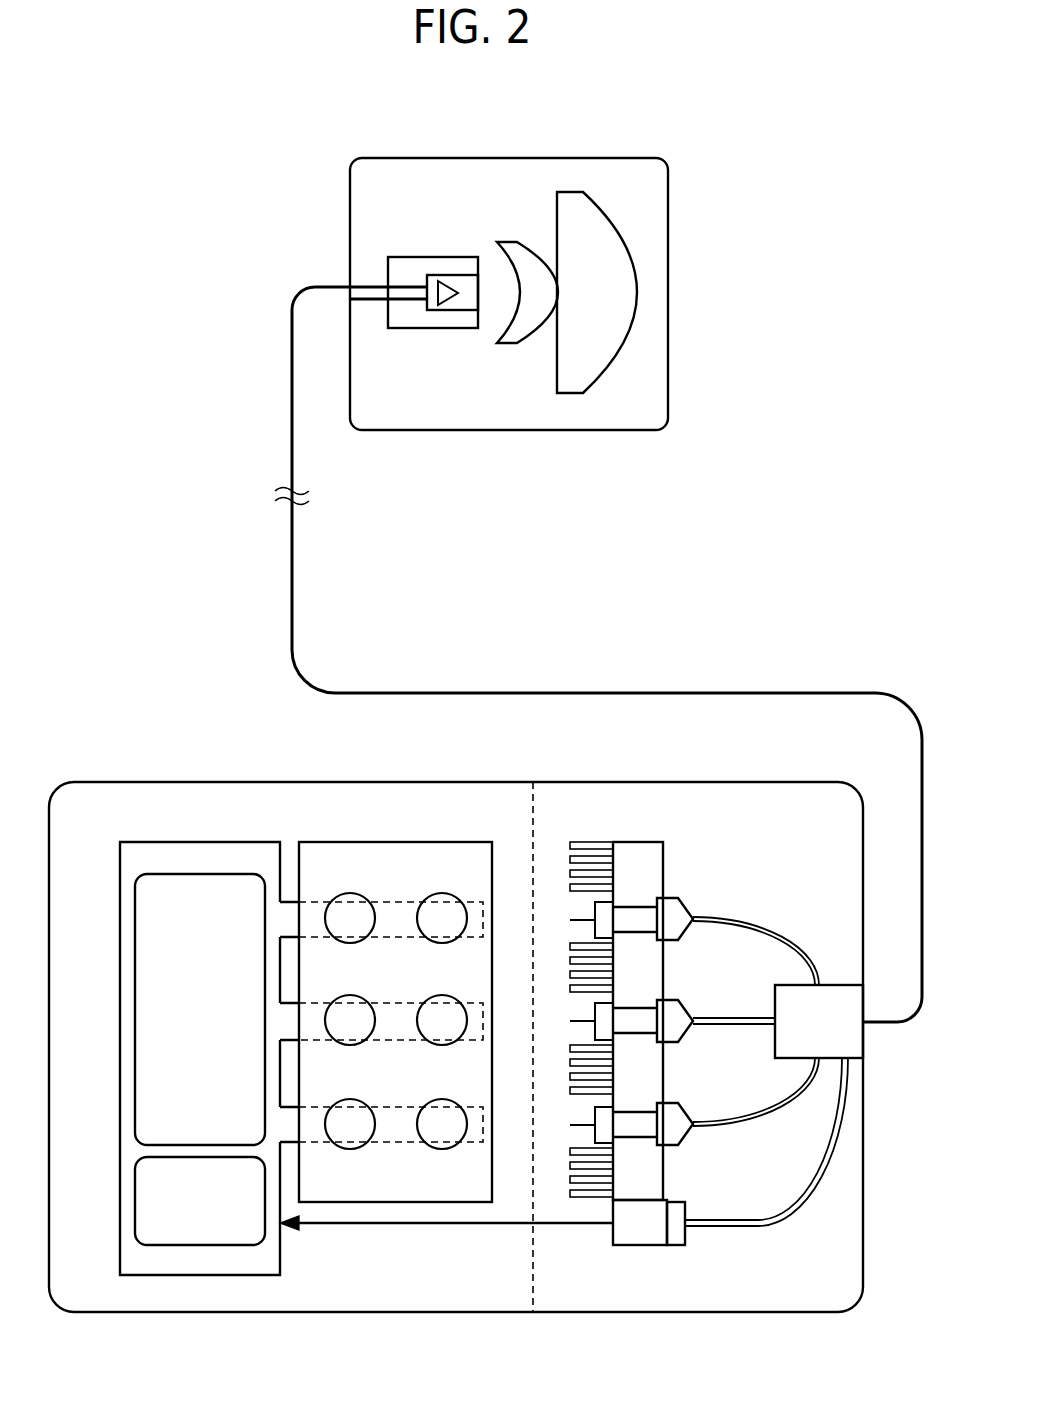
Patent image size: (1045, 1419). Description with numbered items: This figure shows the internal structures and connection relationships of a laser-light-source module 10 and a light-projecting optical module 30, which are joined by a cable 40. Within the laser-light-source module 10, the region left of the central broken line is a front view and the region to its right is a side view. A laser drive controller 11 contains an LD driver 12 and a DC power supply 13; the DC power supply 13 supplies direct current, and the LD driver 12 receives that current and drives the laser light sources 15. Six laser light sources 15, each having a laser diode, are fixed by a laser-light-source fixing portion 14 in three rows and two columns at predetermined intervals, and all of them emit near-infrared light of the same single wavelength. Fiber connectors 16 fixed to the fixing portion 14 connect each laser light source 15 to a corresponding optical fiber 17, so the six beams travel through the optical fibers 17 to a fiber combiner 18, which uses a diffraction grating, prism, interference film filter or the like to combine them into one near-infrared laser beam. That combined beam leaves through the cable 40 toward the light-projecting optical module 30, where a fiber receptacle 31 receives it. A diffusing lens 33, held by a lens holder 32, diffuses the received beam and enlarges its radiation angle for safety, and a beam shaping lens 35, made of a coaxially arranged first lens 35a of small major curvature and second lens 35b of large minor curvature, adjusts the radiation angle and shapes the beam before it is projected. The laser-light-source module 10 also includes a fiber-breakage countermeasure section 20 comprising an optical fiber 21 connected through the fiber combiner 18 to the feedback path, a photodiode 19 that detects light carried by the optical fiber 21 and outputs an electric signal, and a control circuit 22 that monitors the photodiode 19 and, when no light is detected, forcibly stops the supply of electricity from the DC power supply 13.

The laser-light-source module 10 is at (136, 780).
The laser drive controller 11 is at (205, 842).
The LD driver 12 is at (135, 973).
The DC power supply 13 is at (135, 1200).
The laser-light-source fixing portion 14 is at (430, 842).
The laser light source 15 is at (440, 895).
The fiber connector 16 is at (680, 906).
The optical fiber 17 is at (777, 932).
The fiber combiner 18 is at (805, 1036).
The photodiode 19 is at (678, 1213).
The fiber-breakage countermeasure section 20 is at (512, 1283).
The optical fiber 21 is at (782, 1220).
The control circuit 22 is at (648, 1248).
The light-projecting optical module 30 is at (441, 156).
The fiber receptacle 31 is at (403, 257).
The lens holder 32 is at (455, 275).
The diffusing lens 33 is at (452, 312).
The beam shaping lens 35 is at (577, 330).
The first lens 35a is at (517, 252).
The second lens 35b is at (625, 240).
The cable 40 is at (758, 692).